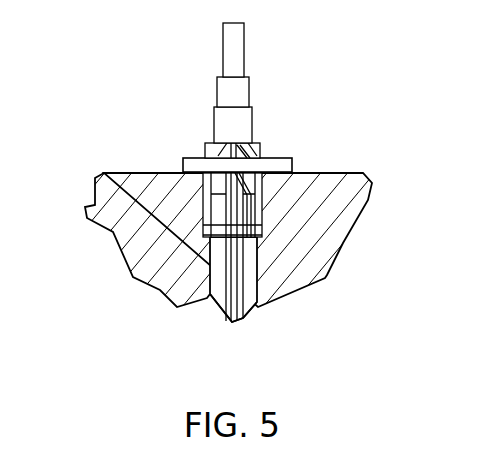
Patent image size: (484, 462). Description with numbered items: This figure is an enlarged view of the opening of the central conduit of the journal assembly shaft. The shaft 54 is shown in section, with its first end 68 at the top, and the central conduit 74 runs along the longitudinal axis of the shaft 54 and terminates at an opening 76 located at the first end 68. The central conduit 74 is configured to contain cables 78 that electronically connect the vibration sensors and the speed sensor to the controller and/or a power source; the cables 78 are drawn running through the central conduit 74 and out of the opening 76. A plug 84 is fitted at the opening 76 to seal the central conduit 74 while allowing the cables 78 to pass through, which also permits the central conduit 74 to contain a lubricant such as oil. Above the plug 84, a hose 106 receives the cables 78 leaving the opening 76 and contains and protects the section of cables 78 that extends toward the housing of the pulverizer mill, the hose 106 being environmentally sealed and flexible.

The shaft 54 is at (112, 233).
The first end 68 is at (298, 92).
The central conduit 74 is at (259, 268).
The opening 76 is at (203, 174).
The cables 78 is at (222, 312).
The plug 84 is at (294, 162).
The hose 106 is at (223, 63).